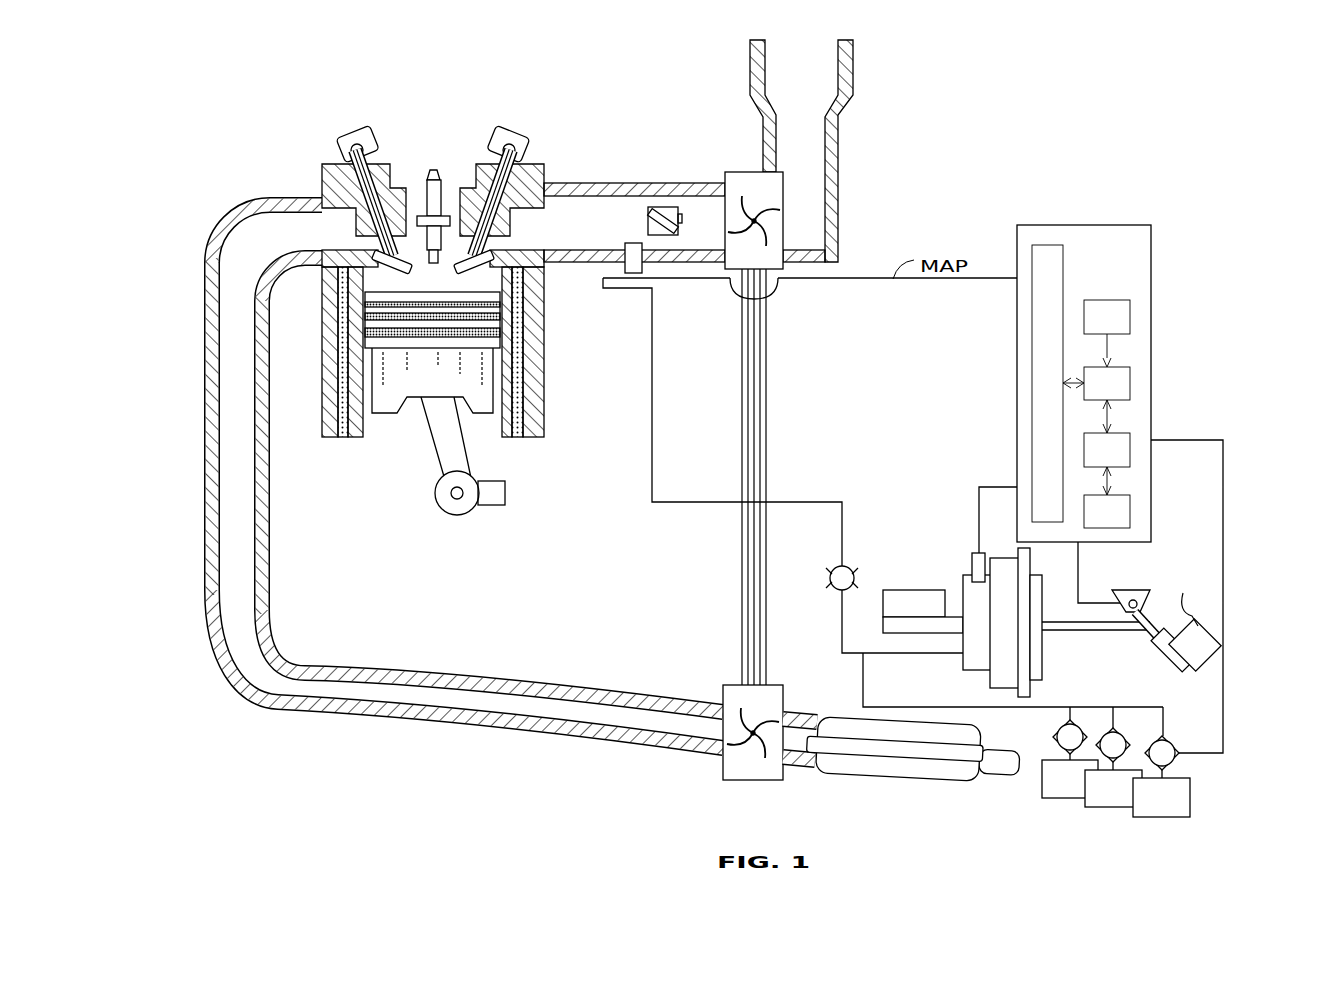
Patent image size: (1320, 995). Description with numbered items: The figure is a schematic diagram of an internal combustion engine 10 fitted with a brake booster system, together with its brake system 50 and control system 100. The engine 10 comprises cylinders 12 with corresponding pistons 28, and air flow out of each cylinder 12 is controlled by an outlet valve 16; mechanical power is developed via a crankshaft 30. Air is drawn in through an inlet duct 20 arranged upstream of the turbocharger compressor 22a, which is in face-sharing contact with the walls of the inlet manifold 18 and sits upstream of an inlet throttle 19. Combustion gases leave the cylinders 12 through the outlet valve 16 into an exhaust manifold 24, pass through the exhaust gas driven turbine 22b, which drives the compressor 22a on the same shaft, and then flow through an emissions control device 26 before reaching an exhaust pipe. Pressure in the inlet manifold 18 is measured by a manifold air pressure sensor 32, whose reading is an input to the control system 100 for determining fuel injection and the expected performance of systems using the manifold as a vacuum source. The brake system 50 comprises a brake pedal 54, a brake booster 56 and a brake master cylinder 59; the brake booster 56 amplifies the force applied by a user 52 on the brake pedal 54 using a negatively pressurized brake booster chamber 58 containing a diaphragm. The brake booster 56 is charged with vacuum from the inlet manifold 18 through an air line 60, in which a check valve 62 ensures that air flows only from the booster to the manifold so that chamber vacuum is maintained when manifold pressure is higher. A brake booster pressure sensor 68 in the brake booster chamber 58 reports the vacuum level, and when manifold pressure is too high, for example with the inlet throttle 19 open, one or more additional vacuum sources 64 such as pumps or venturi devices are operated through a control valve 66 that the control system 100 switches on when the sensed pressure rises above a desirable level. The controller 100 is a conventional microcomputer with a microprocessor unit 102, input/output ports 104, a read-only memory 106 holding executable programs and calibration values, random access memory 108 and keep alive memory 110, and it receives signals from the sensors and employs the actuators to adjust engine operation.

The internal combustion engine 10 is at (252, 112).
The cylinder 12 is at (364, 440).
The outlet valve 16 is at (392, 247).
The inlet manifold 18 is at (598, 205).
The inlet throttle 19 is at (680, 205).
The inlet duct 20 is at (808, 83).
The turbocharger compressor 22a is at (752, 200).
The turbocharger turbine 22b is at (728, 688).
The exhaust manifold 24 is at (247, 242).
The emissions control device 26 is at (850, 775).
The piston 28 is at (410, 380).
The crankshaft 30 is at (462, 500).
The manifold air pressure (MAP) sensor 32 is at (645, 272).
The brake system 50 is at (1215, 600).
The user 52 is at (1200, 612).
The brake pedal 54 is at (1160, 652).
The brake booster 56 is at (976, 594).
The brake booster chamber 58 is at (1015, 660).
The brake master cylinder 59 is at (915, 595).
The air line 60 is at (655, 503).
The check valve 62 is at (830, 580).
The additional vacuum source 64 is at (1178, 794).
The control valve 66 is at (1170, 738).
The brake booster pressure sensor 68 is at (986, 555).
The control system 100 is at (1122, 362).
The microprocessor unit 102 is at (1130, 367).
The input/output ports 104 is at (1055, 247).
The read-only memory 106 is at (1130, 300).
The random access memory 108 is at (1130, 433).
The keep alive memory 110 is at (1130, 500).